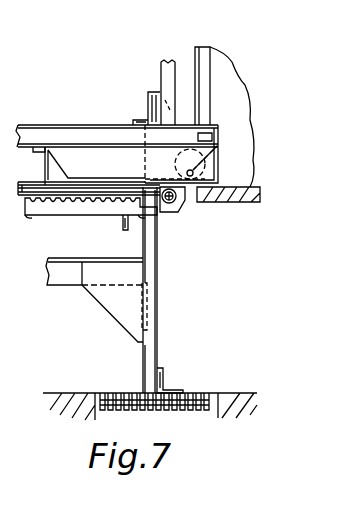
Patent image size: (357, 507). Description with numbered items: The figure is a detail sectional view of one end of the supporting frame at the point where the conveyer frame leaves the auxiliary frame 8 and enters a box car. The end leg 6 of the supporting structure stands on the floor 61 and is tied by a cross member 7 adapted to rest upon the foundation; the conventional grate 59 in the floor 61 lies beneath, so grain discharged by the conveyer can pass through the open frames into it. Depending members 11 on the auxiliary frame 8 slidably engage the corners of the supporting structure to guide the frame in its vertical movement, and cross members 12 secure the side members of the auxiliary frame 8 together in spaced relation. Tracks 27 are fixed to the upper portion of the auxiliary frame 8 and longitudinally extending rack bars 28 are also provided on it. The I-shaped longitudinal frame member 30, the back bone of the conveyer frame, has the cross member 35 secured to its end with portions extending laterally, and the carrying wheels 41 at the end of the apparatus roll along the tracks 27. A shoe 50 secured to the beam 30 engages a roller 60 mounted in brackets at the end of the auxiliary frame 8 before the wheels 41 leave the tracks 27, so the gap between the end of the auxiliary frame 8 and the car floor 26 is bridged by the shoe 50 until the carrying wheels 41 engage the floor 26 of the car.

The longitudinal frame member 30 is at (80, 137).
The cross member 35 is at (152, 94).
The floor of the box car 26 is at (258, 187).
The carrying wheels 41 is at (178, 155).
The shoe 50 is at (52, 167).
The tracks 27 is at (32, 185).
The rack bars 28 is at (72, 214).
The auxiliary frame 8 is at (33, 227).
The cross members 12 is at (126, 229).
The roller 60 is at (180, 207).
The depending members 11 is at (160, 243).
The leg 6 is at (143, 360).
The cross members 7 is at (163, 380).
The floor 61 is at (66, 393).
The grate 59 is at (200, 392).